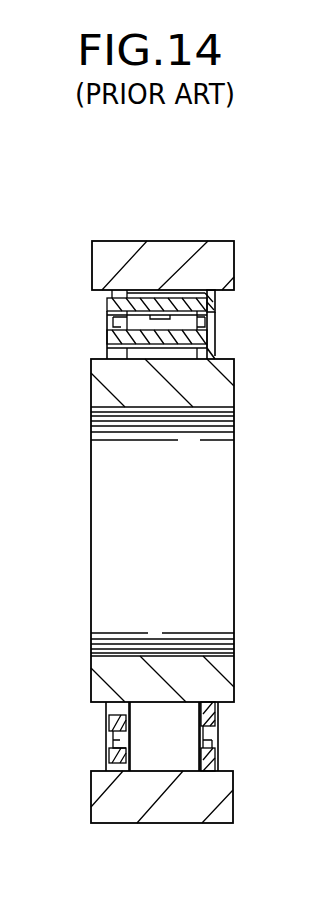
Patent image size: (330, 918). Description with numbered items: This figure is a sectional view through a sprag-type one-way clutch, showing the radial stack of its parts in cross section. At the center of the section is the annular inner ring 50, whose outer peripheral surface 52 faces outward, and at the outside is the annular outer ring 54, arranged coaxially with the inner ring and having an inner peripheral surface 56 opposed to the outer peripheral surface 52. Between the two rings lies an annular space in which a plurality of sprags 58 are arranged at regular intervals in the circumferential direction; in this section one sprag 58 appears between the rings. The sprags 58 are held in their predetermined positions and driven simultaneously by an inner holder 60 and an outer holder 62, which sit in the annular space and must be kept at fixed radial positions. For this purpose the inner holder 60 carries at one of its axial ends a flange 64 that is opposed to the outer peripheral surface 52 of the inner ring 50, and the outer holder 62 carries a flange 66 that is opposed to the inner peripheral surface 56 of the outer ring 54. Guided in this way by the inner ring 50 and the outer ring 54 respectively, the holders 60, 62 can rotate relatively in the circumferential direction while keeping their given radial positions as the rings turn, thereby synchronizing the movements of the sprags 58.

The inner ring 50 is at (165, 397).
The outer peripheral surface 52 is at (230, 706).
The outer ring 54 is at (218, 252).
The inner peripheral surface 56 is at (228, 770).
The sprags 58 is at (178, 748).
The inner holder 60 is at (110, 342).
The outer holder 62 is at (111, 294).
The flange 64 is at (217, 349).
The flange 66 is at (217, 298).